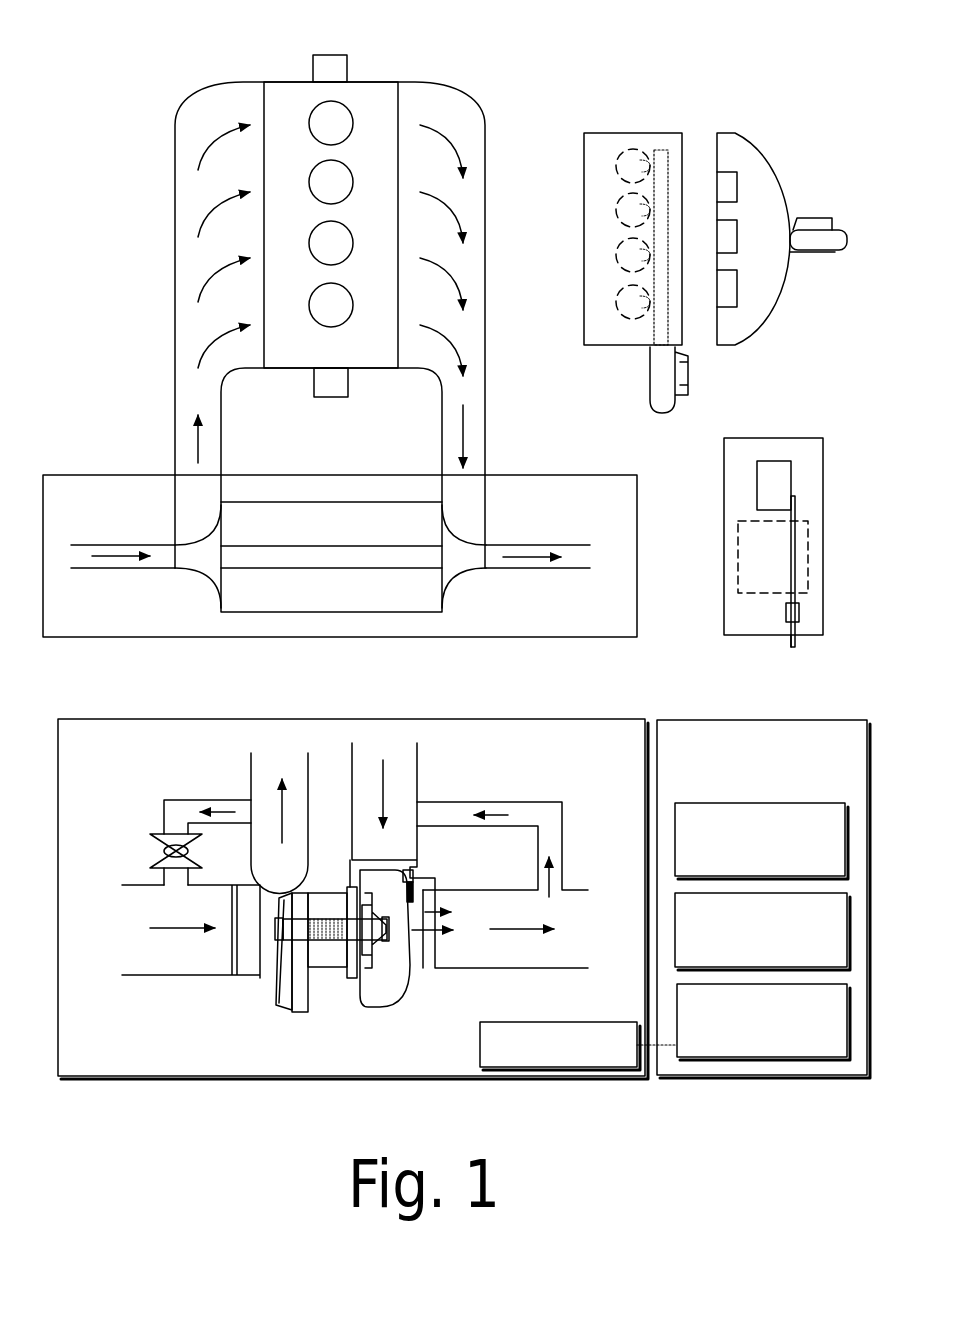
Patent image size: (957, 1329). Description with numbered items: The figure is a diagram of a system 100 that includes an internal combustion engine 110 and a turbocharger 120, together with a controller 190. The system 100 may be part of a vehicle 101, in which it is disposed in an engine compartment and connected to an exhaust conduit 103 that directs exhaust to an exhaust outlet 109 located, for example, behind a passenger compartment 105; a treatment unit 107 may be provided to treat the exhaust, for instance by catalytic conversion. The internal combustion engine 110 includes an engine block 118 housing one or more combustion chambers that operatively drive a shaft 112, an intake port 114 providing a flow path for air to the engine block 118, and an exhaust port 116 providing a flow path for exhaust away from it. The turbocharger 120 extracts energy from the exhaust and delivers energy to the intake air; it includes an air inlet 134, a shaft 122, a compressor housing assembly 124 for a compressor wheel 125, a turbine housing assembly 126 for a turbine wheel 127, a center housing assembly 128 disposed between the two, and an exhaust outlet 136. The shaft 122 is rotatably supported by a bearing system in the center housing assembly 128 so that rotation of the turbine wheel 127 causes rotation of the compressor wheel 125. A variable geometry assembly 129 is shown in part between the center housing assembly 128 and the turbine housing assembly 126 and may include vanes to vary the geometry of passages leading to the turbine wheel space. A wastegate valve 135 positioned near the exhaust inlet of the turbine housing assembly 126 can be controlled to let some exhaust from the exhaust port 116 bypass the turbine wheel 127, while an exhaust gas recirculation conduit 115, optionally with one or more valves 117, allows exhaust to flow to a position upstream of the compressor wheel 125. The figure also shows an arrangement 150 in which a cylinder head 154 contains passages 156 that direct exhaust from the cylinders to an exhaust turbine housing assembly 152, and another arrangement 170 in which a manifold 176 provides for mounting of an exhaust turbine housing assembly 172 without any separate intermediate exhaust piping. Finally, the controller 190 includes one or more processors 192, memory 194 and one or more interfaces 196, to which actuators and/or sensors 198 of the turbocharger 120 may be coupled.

The system 100 is at (472, 35).
The vehicle 101 is at (800, 420).
The exhaust conduit 103 is at (795, 513).
The passenger compartment 105 is at (808, 545).
The treatment unit 107 is at (799, 612).
The exhaust outlet 109 is at (795, 643).
The internal combustion engine 110 is at (297, 81).
The shaft 112 is at (333, 55).
The intake port 114 is at (196, 100).
The exhaust gas recirculation conduit 115 is at (175, 800).
The exhaust port 116 is at (472, 100).
The valve 117 is at (160, 834).
The engine block 118 is at (333, 369).
The turbocharger 120 is at (538, 475).
The shaft 122 is at (330, 569).
The compressor housing assembly 124 is at (203, 578).
The compressor wheel 125 is at (293, 957).
The turbine housing assembly 126 is at (460, 572).
The turbine wheel 127 is at (378, 947).
The center housing assembly 128 is at (365, 1058).
The variable geometry assembly 129 is at (352, 978).
The air inlet 134 is at (143, 545).
The wastegate valve 135 is at (413, 882).
The exhaust outlet 136 is at (542, 545).
The arrangement 150 is at (631, 119).
The exhaust turbine housing assembly 152 is at (648, 372).
The cylinder head 154 is at (584, 215).
The passages 156 is at (662, 150).
The arrangement 170 is at (765, 127).
The exhaust turbine housing assembly 172 is at (817, 253).
The manifold 176 is at (773, 300).
The controller 190 is at (777, 790).
The processors 192 is at (777, 863).
The memory 194 is at (777, 953).
The interfaces 196 is at (777, 1043).
The actuators and/or sensors 198 is at (620, 1055).